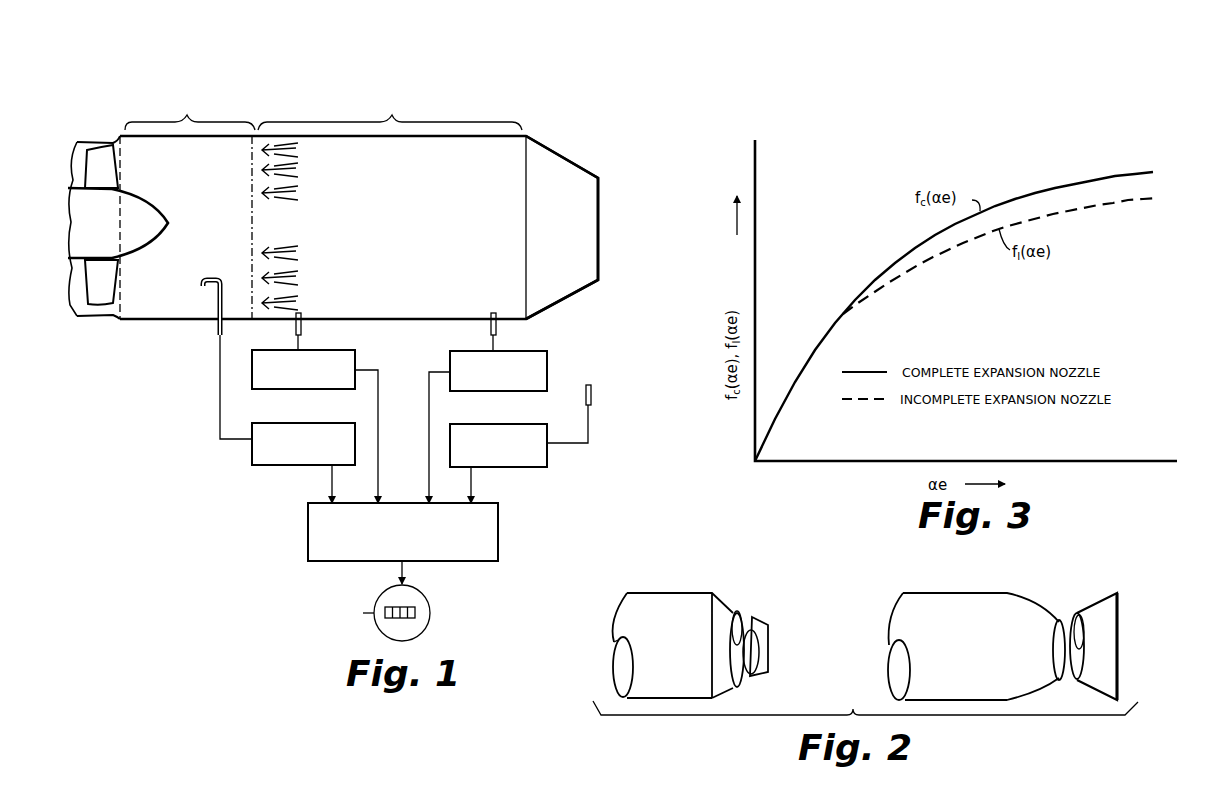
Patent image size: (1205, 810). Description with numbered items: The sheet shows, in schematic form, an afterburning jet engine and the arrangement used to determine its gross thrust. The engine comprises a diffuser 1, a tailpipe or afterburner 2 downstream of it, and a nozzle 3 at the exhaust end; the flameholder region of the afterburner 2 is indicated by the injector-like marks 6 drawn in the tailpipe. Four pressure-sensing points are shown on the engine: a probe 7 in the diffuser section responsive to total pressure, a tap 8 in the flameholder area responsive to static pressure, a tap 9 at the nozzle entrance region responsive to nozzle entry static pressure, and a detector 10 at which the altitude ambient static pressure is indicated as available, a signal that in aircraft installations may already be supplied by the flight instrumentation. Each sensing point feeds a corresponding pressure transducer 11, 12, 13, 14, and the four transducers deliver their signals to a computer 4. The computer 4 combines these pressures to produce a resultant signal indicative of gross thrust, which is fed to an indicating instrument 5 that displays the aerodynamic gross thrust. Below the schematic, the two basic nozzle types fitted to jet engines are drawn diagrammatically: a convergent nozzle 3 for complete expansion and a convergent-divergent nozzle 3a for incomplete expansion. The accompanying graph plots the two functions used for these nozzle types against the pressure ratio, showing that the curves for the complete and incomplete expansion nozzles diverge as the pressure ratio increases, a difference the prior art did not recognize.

In FIG. 1, the diffuser 1 is at (190, 114).
In FIG. 1, the tailpipe (afterburner) 2 is at (390, 114).
In FIG. 1, the nozzle 3 is at (587, 178).
In FIG. 2, the nozzle 3 is at (727, 609).
In FIG. 2, the convergent-divergent exhaust nozzle 3a is at (1027, 617).
In FIG. 1, the computer 4 is at (498, 535).
In FIG. 1, the indicating instrument 5 is at (430, 607).
In FIG. 1, the fuel injection nozzles 6 is at (257, 192).
In FIG. 1, the probe 7 is at (215, 296).
In FIG. 1, the tap 8 is at (295, 328).
In FIG. 1, the tap 9 is at (490, 328).
In FIG. 1, the detector 10 is at (583, 398).
In FIG. 1, the pressure transducer 11 is at (250, 462).
In FIG. 1, the pressure transducer 12 is at (357, 361).
In FIG. 1, the pressure transducer 13 is at (548, 359).
In FIG. 1, the pressure transducer 14 is at (542, 466).